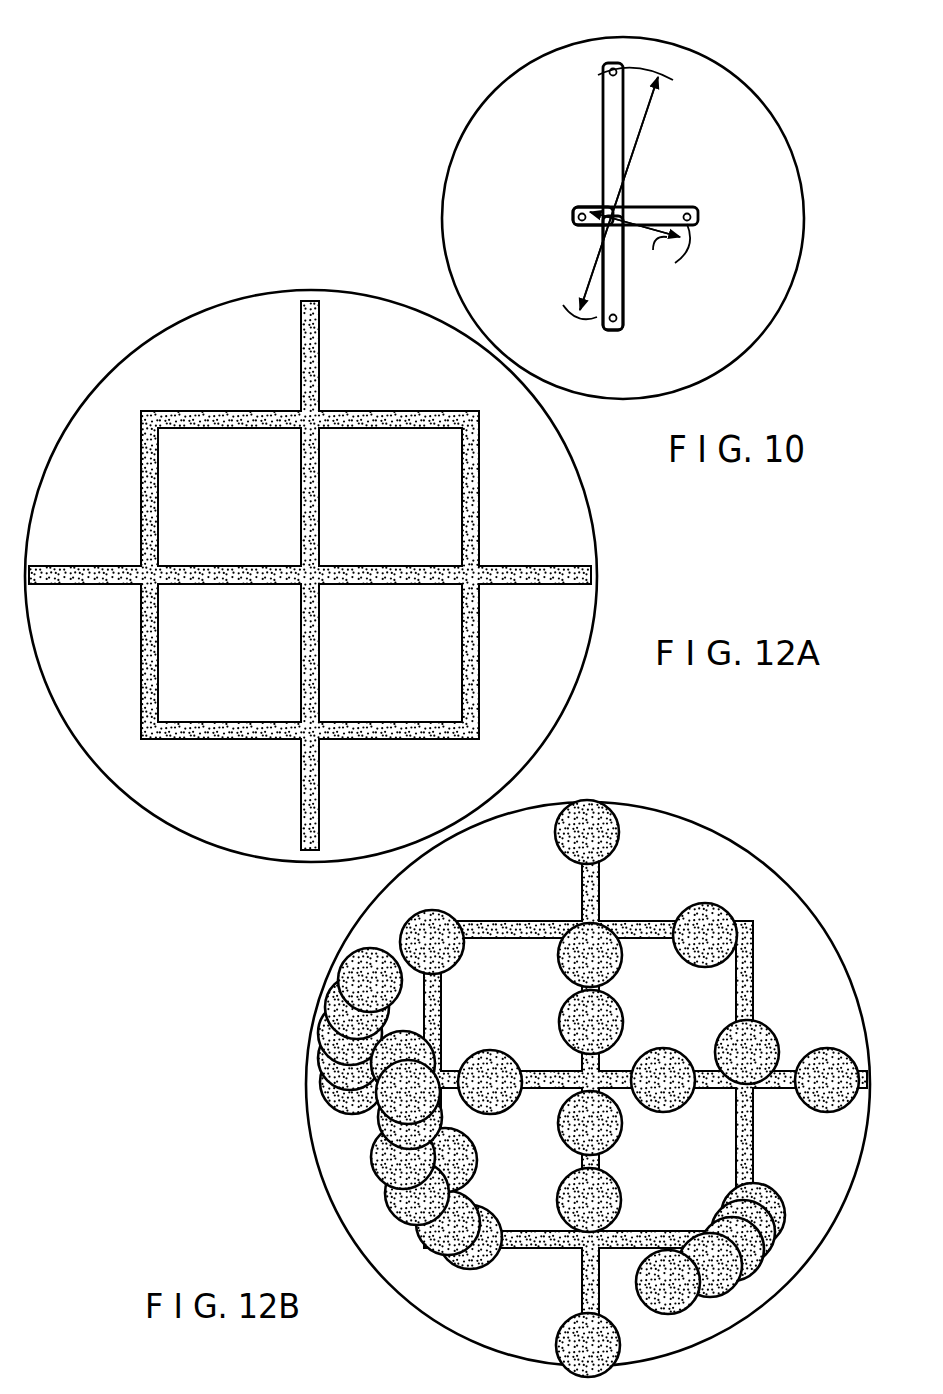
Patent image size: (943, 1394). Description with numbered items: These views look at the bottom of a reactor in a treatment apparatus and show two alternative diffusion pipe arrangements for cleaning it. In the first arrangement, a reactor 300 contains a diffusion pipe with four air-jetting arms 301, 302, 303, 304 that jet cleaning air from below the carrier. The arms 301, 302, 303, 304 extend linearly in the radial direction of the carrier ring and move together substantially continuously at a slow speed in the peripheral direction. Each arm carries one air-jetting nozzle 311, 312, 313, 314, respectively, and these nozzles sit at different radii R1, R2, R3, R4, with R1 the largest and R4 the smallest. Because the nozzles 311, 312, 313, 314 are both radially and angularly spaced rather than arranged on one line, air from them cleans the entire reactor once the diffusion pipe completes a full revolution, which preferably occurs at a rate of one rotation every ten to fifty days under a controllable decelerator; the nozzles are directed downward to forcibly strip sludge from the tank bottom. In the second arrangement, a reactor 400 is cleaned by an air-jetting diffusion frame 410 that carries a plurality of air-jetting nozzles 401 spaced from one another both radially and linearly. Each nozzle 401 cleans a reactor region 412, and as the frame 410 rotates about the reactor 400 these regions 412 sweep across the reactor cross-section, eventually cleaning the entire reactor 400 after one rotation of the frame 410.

In FIG. 10, the reactor 300 is at (486, 80).
In FIG. 10, the air-jetting arm 301 is at (603, 120).
In FIG. 10, the air-jetting arm 302 is at (618, 297).
In FIG. 10, the air-jetting arm 303 is at (647, 197).
In FIG. 10, the air-jetting arm 304 is at (593, 224).
In FIG. 10, the air-jetting nozzle 311 is at (614, 70).
In FIG. 10, the air-jetting nozzle 312 is at (620, 312).
In FIG. 10, the air-jetting nozzle 313 is at (693, 212).
In FIG. 10, the air-jetting nozzle 314 is at (579, 212).
In FIG. 10, the radius R1 is at (643, 133).
In FIG. 10, the radius R2 is at (588, 305).
In FIG. 10, the radius R3 is at (675, 263).
In FIG. 10, the radius R4 is at (586, 214).
In FIG. 12A, the reactor 400 is at (158, 312).
In FIG. 12B, the reactor 400 is at (296, 1162).
In FIG. 12A, the air-jetting nozzle 401 is at (64, 567).
In FIG. 12A, the air-jetting diffusion frame 410 is at (203, 411).
In FIG. 12B, the reactor region 412 is at (492, 1053).